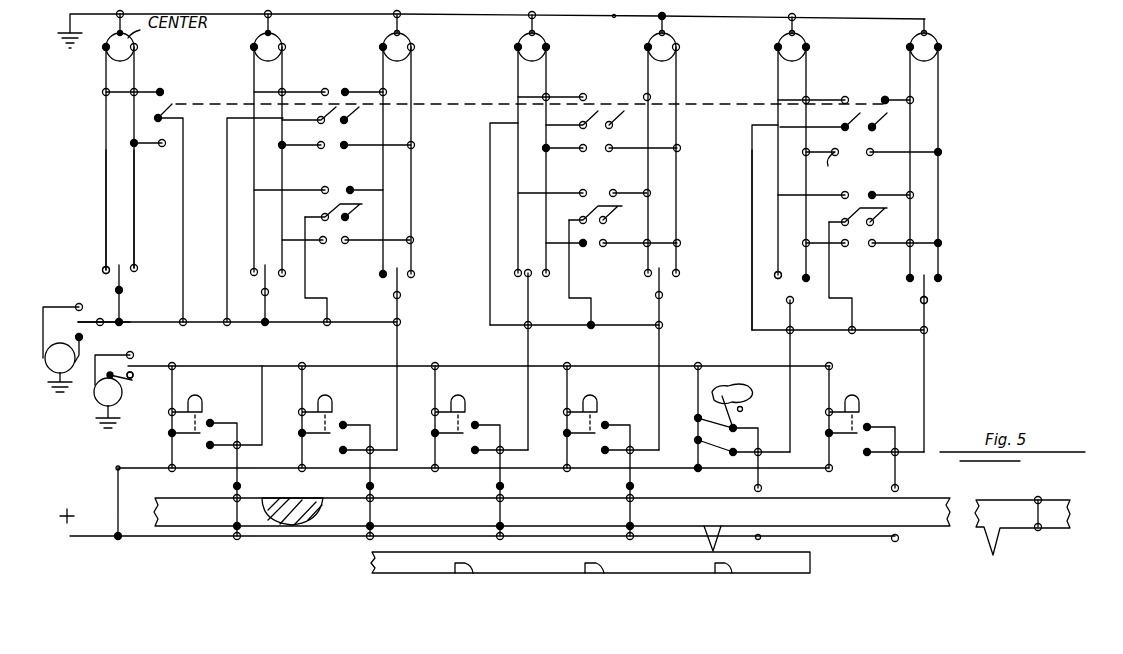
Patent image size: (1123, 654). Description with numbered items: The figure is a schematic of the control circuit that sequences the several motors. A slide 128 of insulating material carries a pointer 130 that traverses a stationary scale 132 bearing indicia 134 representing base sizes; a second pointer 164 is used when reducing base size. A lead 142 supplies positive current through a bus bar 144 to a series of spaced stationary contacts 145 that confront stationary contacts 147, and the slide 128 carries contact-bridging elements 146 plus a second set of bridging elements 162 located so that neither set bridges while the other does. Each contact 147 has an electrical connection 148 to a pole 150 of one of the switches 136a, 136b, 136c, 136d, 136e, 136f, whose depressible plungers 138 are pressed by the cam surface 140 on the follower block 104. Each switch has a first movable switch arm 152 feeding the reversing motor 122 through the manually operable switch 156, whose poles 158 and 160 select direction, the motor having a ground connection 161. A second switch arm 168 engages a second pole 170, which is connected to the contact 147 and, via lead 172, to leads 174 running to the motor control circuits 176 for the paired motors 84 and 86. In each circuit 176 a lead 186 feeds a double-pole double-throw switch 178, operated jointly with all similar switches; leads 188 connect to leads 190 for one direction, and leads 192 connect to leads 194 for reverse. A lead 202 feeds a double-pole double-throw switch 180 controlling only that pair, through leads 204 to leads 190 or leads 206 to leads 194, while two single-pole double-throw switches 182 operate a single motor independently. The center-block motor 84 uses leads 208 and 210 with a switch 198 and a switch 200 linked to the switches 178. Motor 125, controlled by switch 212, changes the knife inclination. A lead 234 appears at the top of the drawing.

The motor 84 is at (106, 70).
The motor 86 is at (256, 70).
The indicia 134 is at (492, 14).
The conductor 234 is at (614, 16).
The single-pole double-throw switch 200 is at (178, 84).
The lead 208 is at (104, 185).
The lead 210 is at (138, 190).
The single-pole double-throw switch 198 is at (108, 278).
The pole 158 is at (136, 336).
The manually operable switch 212 is at (86, 328).
The motor control circuit 176 is at (414, 192).
The lead 174 is at (258, 352).
The lead 190 is at (512, 93).
The lead 204 is at (614, 190).
The double-pole double-throw switch 178 is at (955, 128).
The lead 192 is at (870, 156).
The lead 194 is at (808, 74).
The lead 188 is at (890, 96).
The lead 186 is at (752, 196).
The double-pole double-throw switch 180 is at (600, 242).
The lead 202 is at (574, 282).
The lead 206 is at (940, 255).
The single-pole double-throw switch 182 is at (738, 302).
The motor 125 is at (50, 368).
The motor 122 is at (92, 400).
The pole 160 is at (122, 382).
The ground connection 161 is at (108, 416).
The single-pole double-throw manually operable switch 156 is at (152, 360).
The switch 136a is at (210, 398).
The switch 136b is at (340, 398).
The switch 136c is at (472, 398).
The switch 136d is at (604, 398).
The switch 136e is at (790, 395).
The end switch 136f is at (876, 398).
The follower block 104 is at (716, 372).
The cam surface 140 is at (744, 388).
The first movable switch arm 152 is at (690, 416).
The depressible plunger 138 is at (738, 412).
The switch arm 168 is at (700, 442).
The pole 150 is at (236, 422).
The second pole 170 is at (792, 488).
The stationary contact 147 is at (754, 488).
The electrical connection 148 is at (246, 488).
The slide 128 is at (436, 500).
The lead 172 is at (610, 478).
The bus bar 144 is at (312, 540).
The contact-bridging element 146 is at (370, 508).
The stationary contact 145 is at (232, 538).
The lead 142 is at (96, 540).
The pointer 130 is at (705, 528).
The stationary scale 132 is at (376, 556).
The pointer 164 is at (986, 544).
The bridging element 162 is at (1038, 530).